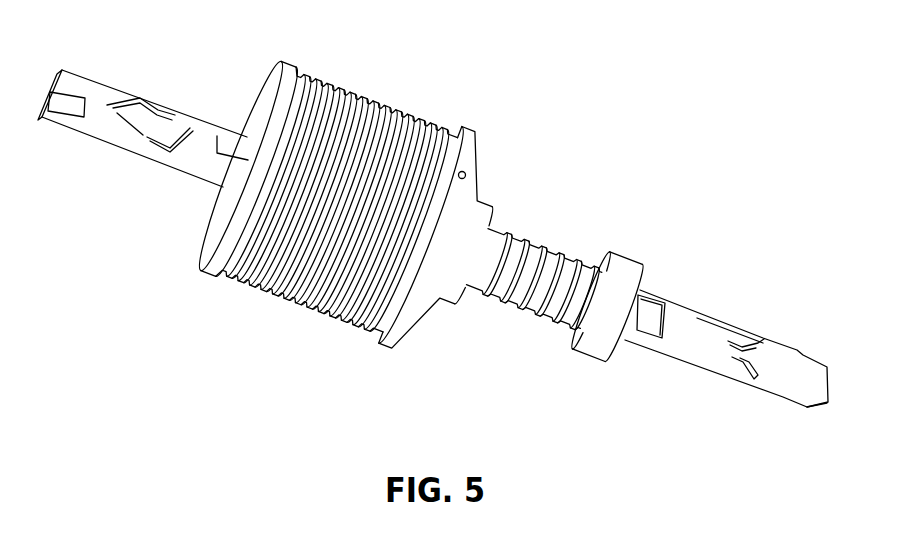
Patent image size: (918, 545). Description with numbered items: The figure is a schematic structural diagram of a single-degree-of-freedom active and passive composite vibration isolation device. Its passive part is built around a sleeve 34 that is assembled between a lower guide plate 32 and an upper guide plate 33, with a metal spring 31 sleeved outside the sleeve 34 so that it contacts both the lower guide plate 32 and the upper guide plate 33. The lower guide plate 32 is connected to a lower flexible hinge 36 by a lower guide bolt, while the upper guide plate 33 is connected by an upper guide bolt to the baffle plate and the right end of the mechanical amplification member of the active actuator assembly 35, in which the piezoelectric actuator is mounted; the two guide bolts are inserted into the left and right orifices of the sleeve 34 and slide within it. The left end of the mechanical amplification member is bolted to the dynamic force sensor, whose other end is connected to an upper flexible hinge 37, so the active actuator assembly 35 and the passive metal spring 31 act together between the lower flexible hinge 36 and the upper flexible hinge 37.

The metal spring 31 is at (527, 238).
The lower guide plate 32 is at (627, 270).
The upper guide plate 33 is at (475, 213).
The sleeve 34 is at (582, 266).
The threaded housing 35 is at (307, 130).
The lower flexible hinge 36 is at (675, 322).
The upper flexible hinge 37 is at (92, 113).